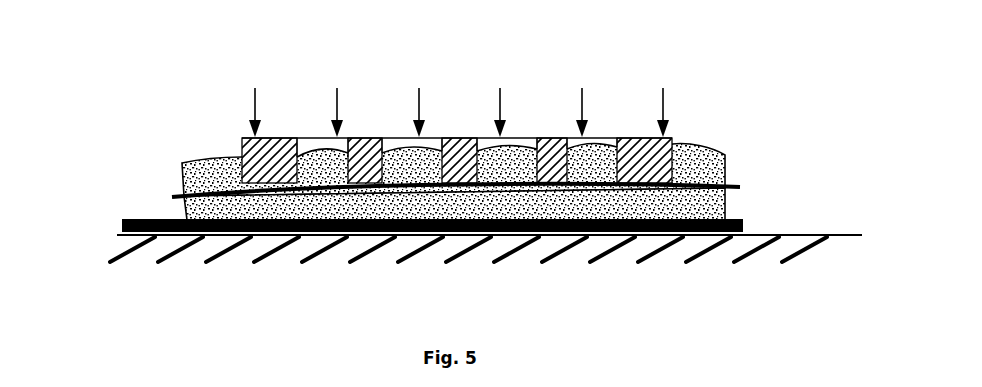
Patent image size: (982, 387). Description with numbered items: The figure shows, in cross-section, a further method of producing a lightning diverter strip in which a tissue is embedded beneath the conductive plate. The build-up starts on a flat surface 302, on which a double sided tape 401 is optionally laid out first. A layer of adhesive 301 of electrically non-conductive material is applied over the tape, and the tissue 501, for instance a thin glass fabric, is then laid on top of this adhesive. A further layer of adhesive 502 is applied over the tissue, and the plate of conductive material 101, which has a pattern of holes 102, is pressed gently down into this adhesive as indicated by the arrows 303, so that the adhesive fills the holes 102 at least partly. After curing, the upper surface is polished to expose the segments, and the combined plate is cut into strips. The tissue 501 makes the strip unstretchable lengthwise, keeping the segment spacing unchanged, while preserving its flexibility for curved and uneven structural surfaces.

The plate 101 is at (242, 138).
The holes 102 is at (578, 138).
The arrows 303 is at (665, 103).
The further layer of adhesive 502 is at (190, 162).
The tissue 501 is at (183, 187).
The layer of adhesive 301 is at (725, 200).
The double sided tape 401 is at (157, 218).
The flat surface 302 is at (157, 238).